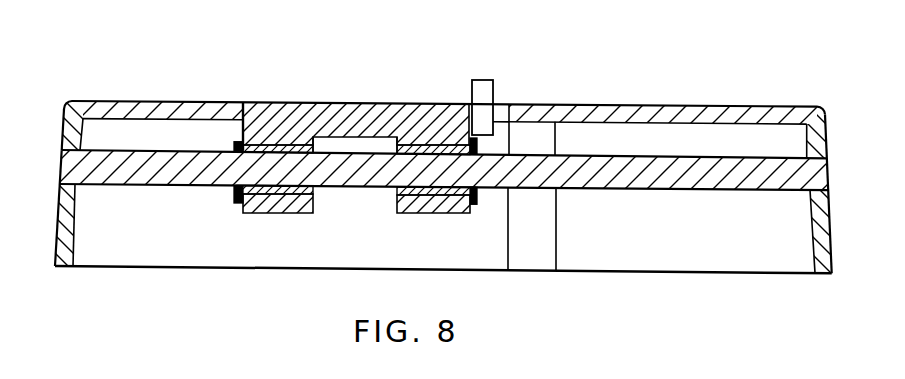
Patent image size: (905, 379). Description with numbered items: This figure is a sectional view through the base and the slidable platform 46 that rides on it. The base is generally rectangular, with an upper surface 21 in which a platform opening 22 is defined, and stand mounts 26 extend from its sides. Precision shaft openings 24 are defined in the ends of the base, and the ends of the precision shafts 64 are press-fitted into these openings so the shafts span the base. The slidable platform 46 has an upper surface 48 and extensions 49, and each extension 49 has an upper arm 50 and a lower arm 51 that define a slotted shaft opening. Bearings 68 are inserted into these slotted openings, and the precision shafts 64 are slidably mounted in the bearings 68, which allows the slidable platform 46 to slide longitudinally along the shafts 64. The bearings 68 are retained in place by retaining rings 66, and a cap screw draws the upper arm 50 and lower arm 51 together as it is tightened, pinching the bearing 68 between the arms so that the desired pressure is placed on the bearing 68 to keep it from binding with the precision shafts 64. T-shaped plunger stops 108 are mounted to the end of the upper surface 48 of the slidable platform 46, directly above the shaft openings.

The upper surface 21 is at (130, 101).
The platform opening 22 is at (63, 110).
The precision shaft openings 24 is at (243, 101).
The stand mounts 26 is at (61, 178).
The slidable platform 46 is at (335, 144).
The upper surface 48 is at (392, 103).
The extensions 49 is at (397, 205).
The upper arm 50 is at (313, 101).
The lower arm 51 is at (292, 214).
The precision shafts 64 is at (705, 191).
The retaining rings 66 is at (236, 193).
The bearings 68 is at (278, 145).
The T-shaped plunger stops 108 is at (493, 93).